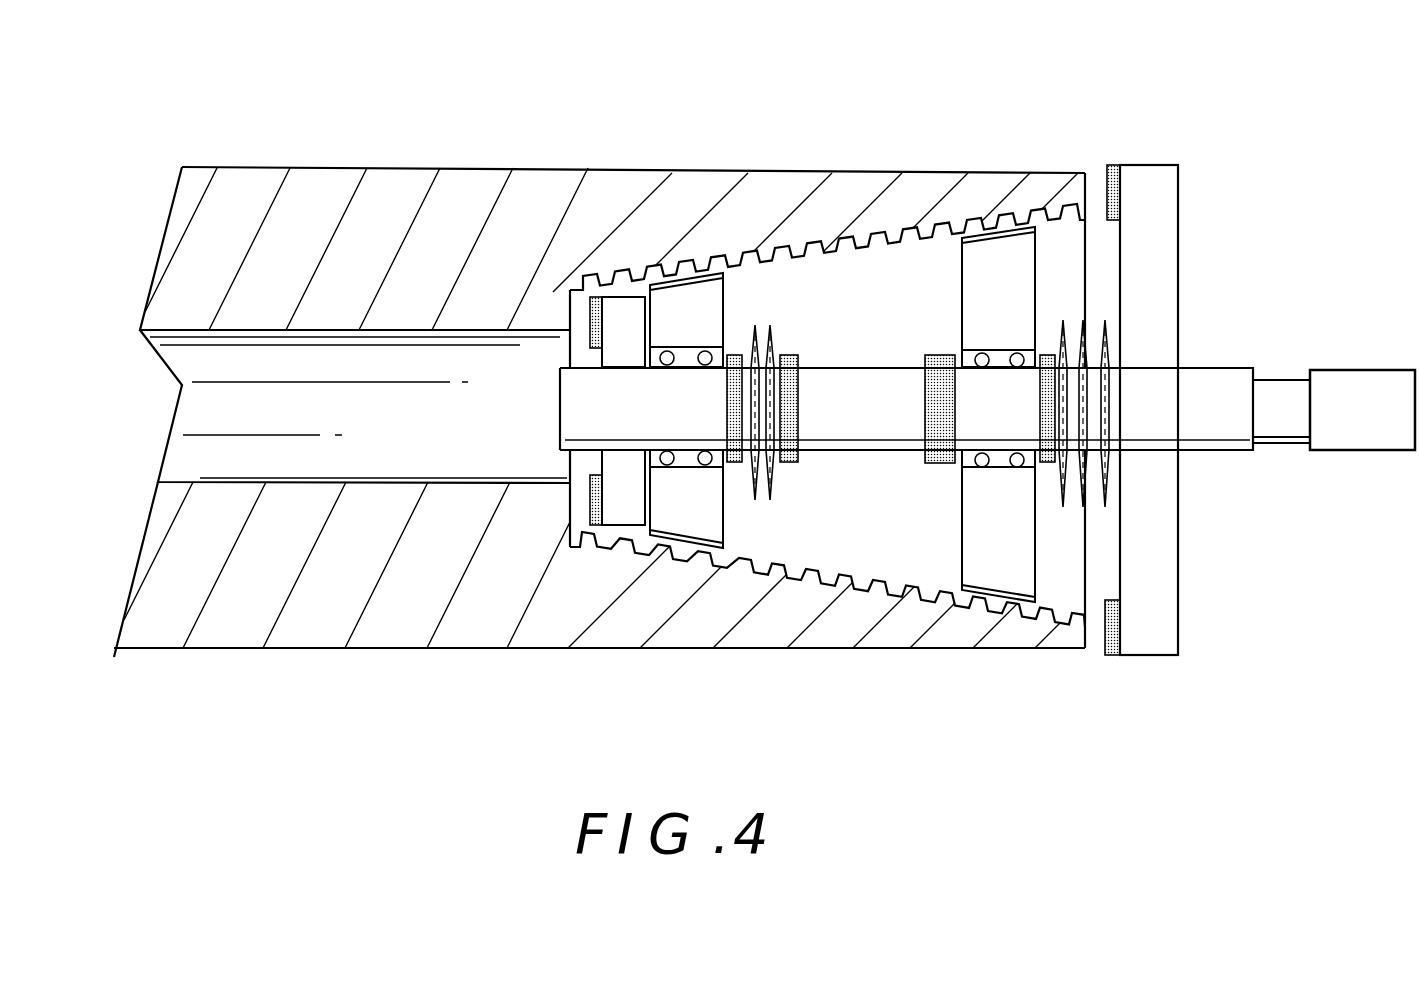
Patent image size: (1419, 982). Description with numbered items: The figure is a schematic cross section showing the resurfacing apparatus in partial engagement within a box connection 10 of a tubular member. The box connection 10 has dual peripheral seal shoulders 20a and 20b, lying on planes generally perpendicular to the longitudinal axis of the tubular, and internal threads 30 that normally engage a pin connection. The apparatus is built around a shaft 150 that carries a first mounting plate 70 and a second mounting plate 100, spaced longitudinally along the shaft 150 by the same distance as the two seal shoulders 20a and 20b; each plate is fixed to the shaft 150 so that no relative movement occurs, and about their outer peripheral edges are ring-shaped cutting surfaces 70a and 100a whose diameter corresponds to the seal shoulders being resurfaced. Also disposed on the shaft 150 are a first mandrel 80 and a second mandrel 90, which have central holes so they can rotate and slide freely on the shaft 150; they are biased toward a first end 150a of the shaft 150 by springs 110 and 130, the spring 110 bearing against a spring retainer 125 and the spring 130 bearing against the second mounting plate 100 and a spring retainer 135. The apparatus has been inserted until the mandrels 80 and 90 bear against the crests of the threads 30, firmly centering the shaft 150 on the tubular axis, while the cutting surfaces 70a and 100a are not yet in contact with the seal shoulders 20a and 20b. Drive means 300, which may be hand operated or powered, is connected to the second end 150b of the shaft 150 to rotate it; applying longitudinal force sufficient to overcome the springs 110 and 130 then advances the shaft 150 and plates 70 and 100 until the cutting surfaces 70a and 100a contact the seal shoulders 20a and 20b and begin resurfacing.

The box connection 10 is at (323, 165).
The seal shoulder 20a is at (567, 310).
The seal shoulder 20b is at (1087, 186).
The threads 30 is at (855, 597).
The first mounting plate 70 is at (613, 513).
The cutting surface 70a is at (588, 502).
The first mandrel 80 is at (700, 525).
The second mandrel 90 is at (983, 572).
The second mounting plate 100 is at (1160, 625).
The cutting surface 100a is at (1113, 163).
The spring 110 is at (763, 500).
The spring retainer 125 is at (737, 353).
The spring 130 is at (1093, 510).
The spring retainer 135 is at (1048, 467).
The shaft 150 is at (1203, 380).
The first end of shaft 150a is at (560, 402).
The second end of shaft 150b is at (1262, 452).
The drive means 300 is at (1360, 455).